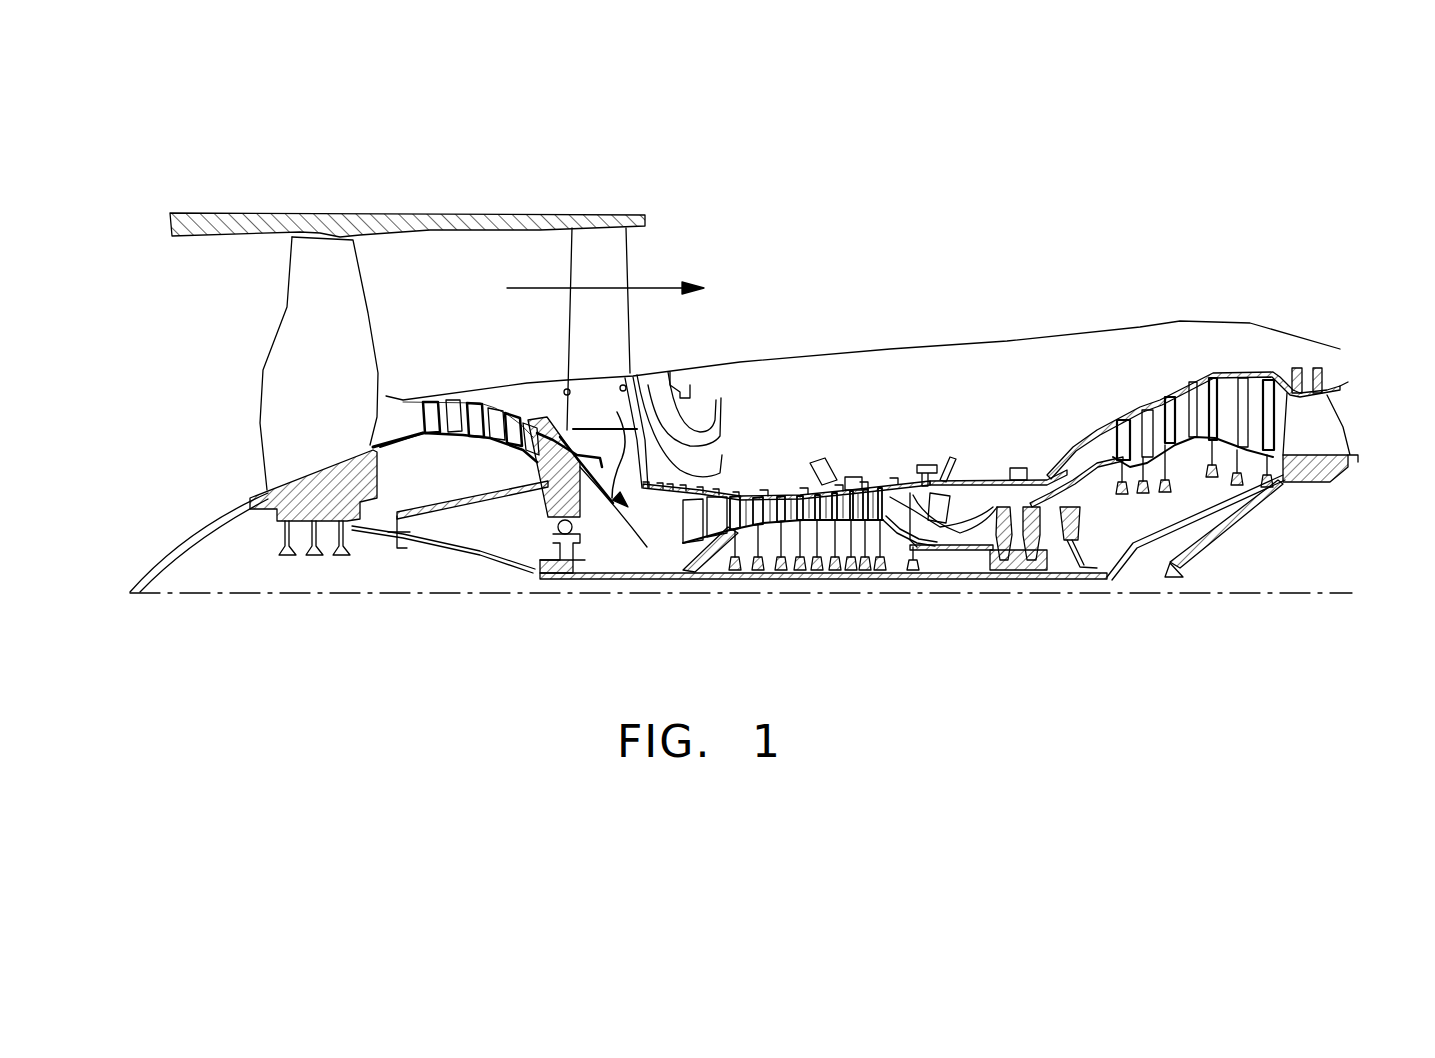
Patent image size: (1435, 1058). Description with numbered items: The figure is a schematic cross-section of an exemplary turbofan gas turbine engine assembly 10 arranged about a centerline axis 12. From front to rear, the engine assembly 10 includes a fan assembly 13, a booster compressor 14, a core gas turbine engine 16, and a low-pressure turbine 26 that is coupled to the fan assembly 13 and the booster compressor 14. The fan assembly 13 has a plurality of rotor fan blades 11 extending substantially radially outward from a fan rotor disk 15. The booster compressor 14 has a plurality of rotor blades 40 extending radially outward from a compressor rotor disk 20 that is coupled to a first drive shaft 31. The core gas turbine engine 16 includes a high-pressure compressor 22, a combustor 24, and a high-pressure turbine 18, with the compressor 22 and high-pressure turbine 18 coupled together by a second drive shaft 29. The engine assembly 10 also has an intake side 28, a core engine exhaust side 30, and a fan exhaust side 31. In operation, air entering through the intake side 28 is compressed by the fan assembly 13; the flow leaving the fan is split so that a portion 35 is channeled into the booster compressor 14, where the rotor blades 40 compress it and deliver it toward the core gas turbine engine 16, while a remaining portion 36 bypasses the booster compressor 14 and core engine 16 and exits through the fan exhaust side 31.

The turbofan gas turbine engine assembly 10 is at (767, 392).
The rotor fan blades 11 is at (353, 313).
The centerline axis 12 is at (315, 596).
The fan assembly 13 is at (293, 414).
The booster compressor 14 is at (465, 415).
The fan rotor disk 15 is at (297, 507).
The core gas turbine engine 16 is at (940, 393).
The high-pressure turbine 18 is at (1000, 565).
The compressor rotor disk 20 is at (433, 443).
The high-pressure compressor 22 is at (697, 502).
The combustor 24 is at (963, 500).
The low-pressure turbine 26 is at (1239, 362).
The intake side 28 is at (170, 273).
The second drive shaft 29 is at (943, 550).
The core engine exhaust side 30 is at (1378, 396).
The first drive shaft / fan exhaust side 31 is at (665, 238).
The portion of the airflow 35 is at (594, 451).
The remaining portion of the airflow 36 is at (545, 288).
The rotor blades 40 is at (433, 400).